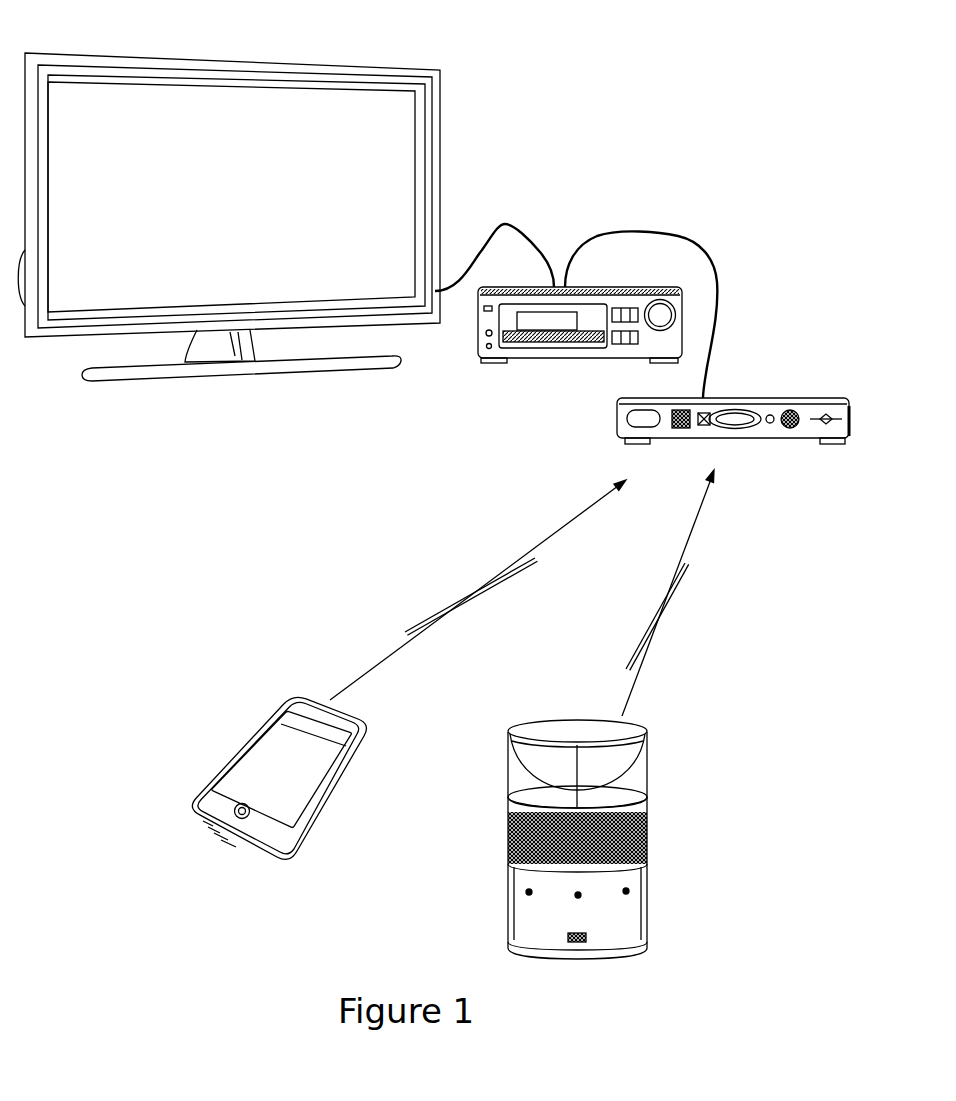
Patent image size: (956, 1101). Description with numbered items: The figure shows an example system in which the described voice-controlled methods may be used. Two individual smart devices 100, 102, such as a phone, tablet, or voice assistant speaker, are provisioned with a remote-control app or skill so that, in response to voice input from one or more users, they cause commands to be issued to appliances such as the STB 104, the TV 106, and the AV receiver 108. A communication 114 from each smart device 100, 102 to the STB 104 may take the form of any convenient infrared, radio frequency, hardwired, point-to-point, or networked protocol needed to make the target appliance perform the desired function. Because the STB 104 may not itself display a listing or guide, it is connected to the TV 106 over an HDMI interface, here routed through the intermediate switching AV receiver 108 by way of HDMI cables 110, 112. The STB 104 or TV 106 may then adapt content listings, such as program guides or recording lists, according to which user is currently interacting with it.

The smart device 100 is at (270, 863).
The smart device 102 is at (603, 839).
The STB 104 is at (778, 393).
The TV 106 is at (370, 63).
The AV receiver 108 is at (552, 363).
The HDMI cable 110 is at (505, 222).
The HDMI cable 112 is at (607, 231).
The communication 114 is at (478, 578).